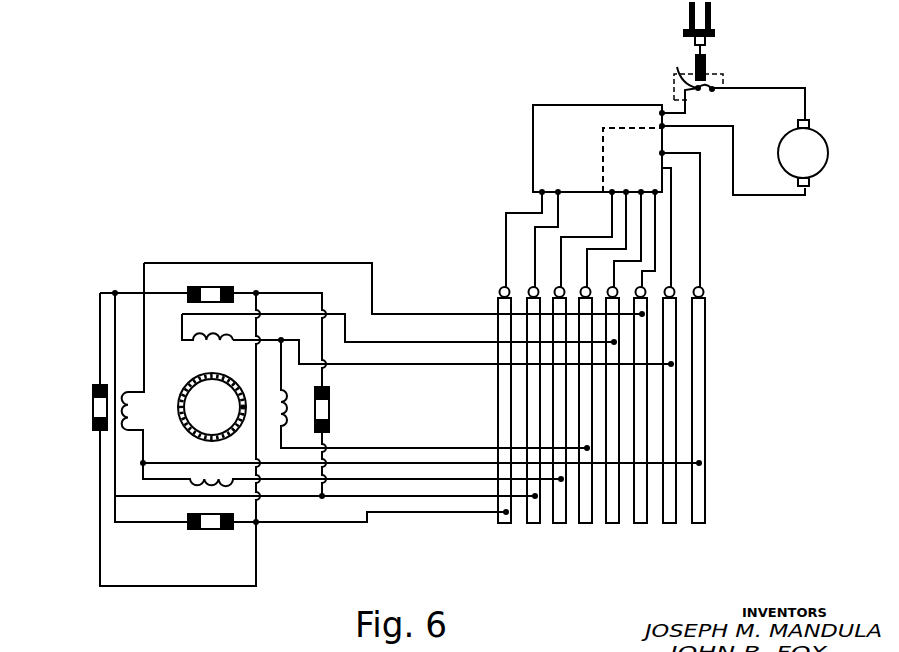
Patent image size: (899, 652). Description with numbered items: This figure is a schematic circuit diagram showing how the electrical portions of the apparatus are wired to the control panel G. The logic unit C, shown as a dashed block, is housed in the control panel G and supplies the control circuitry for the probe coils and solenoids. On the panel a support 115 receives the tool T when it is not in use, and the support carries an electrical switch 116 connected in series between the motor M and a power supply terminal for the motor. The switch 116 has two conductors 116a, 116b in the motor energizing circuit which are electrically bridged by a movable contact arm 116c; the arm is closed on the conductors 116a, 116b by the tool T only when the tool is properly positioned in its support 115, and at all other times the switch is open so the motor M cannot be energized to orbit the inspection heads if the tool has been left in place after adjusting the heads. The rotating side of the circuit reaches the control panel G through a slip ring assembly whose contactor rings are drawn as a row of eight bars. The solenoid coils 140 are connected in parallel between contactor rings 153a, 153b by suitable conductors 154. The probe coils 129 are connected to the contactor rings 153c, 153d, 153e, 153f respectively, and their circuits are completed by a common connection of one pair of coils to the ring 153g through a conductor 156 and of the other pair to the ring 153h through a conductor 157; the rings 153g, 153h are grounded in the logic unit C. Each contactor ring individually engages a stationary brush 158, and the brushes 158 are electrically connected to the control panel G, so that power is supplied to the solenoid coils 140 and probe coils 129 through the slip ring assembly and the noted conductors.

The support 115 is at (735, 84).
The electrical switch 116 is at (713, 92).
The conductor 116a is at (676, 71).
The conductor 116b is at (721, 95).
The movable contact arm 116c is at (722, 80).
The probe coils 129 is at (211, 339).
The solenoid coils 140 is at (231, 293).
The contactor ring 153a is at (500, 524).
The contactor ring 153b is at (534, 524).
The contactor ring 153c is at (559, 524).
The contactor ring 153d is at (586, 524).
The contactor ring 153e is at (613, 524).
The contactor ring 153f is at (641, 524).
The contactor ring 153g is at (670, 524).
The contactor ring 153h is at (701, 335).
The conductors 154 is at (347, 497).
The conductor 156 is at (398, 365).
The conductor 157 is at (682, 463).
The stationary brushes 158 is at (535, 290).
The control panel G is at (632, 93).
The logic unit C is at (605, 155).
The tool T is at (708, 62).
The motor M is at (803, 153).